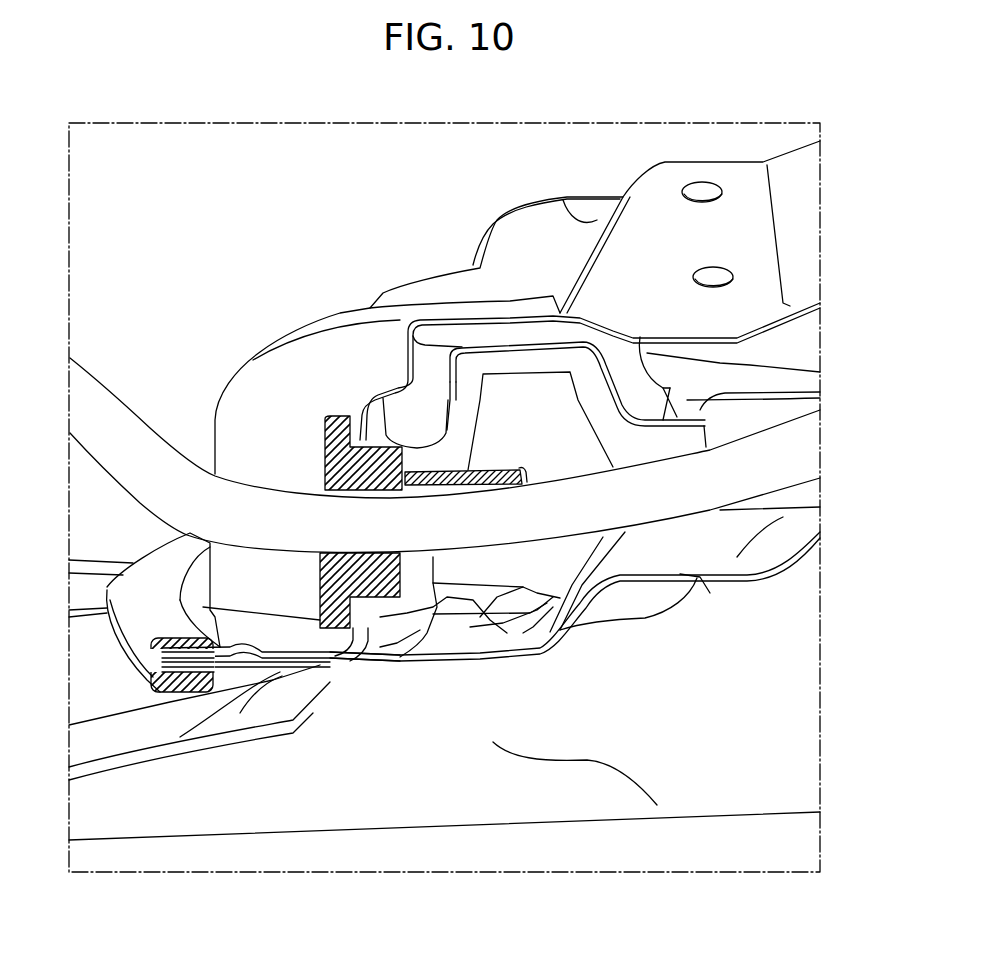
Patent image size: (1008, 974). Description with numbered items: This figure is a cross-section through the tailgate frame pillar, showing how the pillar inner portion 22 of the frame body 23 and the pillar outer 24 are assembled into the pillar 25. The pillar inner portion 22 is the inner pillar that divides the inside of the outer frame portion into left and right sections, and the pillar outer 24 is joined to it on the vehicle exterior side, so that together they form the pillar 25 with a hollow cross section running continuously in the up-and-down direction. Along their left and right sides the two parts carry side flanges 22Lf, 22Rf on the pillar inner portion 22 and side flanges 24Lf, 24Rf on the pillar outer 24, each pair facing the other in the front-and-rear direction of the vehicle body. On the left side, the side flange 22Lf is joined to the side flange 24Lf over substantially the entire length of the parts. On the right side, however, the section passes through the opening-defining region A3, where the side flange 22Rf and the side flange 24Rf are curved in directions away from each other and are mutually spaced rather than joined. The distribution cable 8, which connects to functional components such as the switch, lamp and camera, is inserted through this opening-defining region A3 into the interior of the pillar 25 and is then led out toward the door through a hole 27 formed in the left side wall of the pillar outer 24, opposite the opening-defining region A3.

The distribution cable 8 is at (730, 477).
The pillar outer 24 is at (480, 330).
The pillar 25 is at (525, 320).
The hole 27 is at (351, 420).
The side flange 24Rf is at (667, 388).
The opening-defining region A3 is at (667, 389).
The pillar inner portion 22 is at (491, 736).
The frame body 23 is at (480, 677).
The side flange 22Lf is at (330, 680).
The side flange 24Lf is at (393, 678).
The side flange 22Rf is at (641, 578).